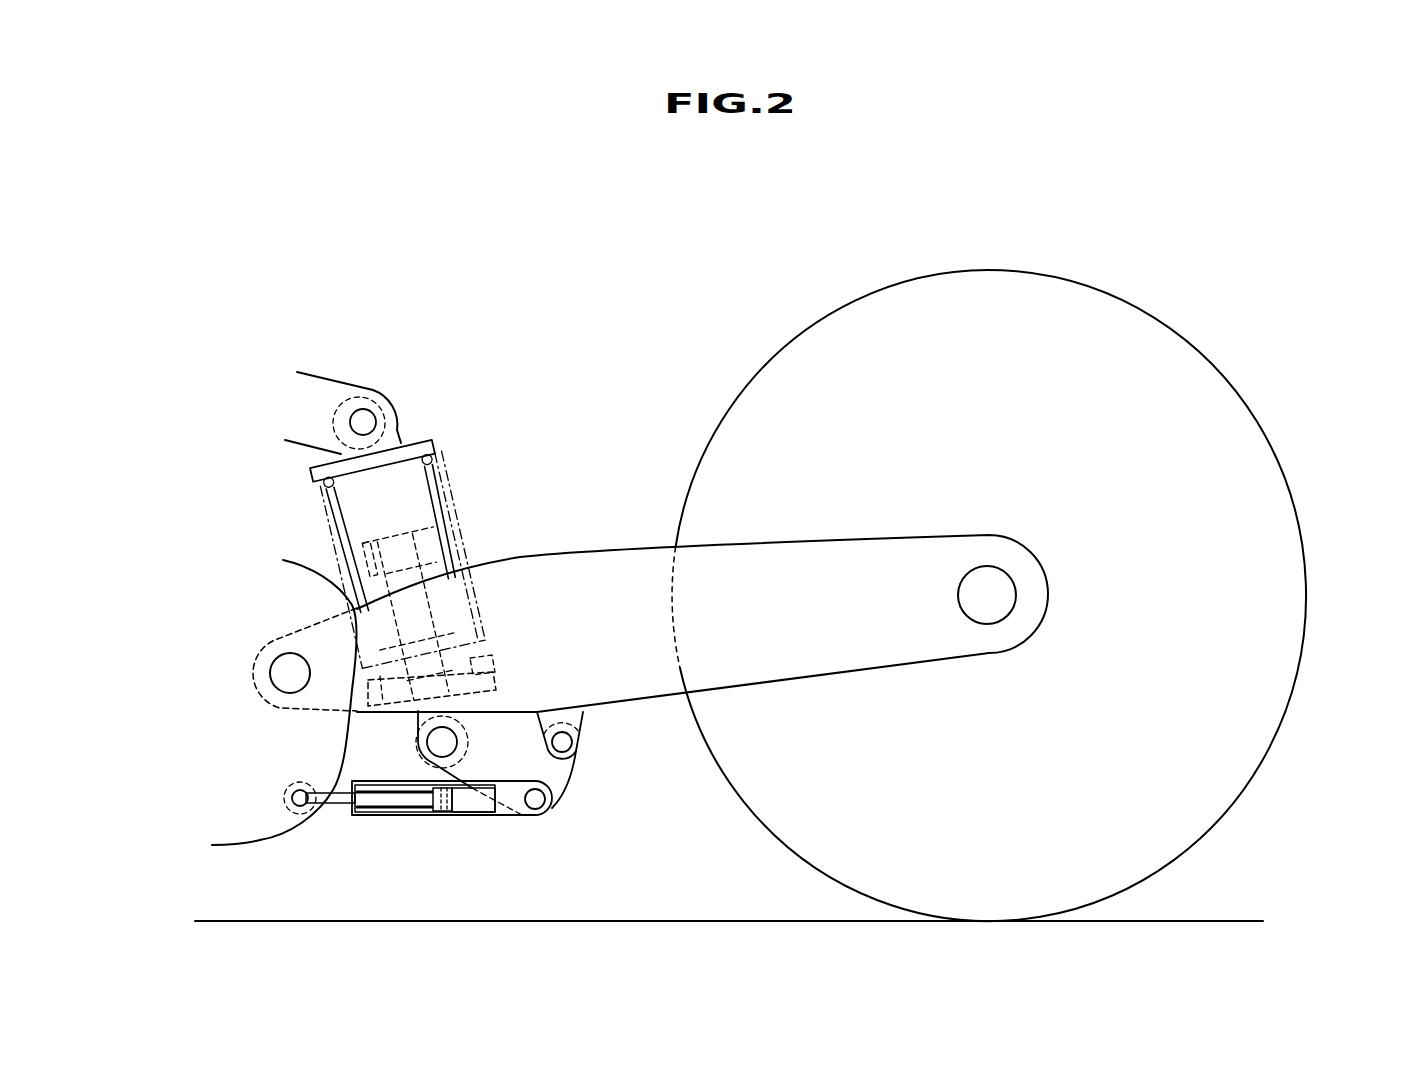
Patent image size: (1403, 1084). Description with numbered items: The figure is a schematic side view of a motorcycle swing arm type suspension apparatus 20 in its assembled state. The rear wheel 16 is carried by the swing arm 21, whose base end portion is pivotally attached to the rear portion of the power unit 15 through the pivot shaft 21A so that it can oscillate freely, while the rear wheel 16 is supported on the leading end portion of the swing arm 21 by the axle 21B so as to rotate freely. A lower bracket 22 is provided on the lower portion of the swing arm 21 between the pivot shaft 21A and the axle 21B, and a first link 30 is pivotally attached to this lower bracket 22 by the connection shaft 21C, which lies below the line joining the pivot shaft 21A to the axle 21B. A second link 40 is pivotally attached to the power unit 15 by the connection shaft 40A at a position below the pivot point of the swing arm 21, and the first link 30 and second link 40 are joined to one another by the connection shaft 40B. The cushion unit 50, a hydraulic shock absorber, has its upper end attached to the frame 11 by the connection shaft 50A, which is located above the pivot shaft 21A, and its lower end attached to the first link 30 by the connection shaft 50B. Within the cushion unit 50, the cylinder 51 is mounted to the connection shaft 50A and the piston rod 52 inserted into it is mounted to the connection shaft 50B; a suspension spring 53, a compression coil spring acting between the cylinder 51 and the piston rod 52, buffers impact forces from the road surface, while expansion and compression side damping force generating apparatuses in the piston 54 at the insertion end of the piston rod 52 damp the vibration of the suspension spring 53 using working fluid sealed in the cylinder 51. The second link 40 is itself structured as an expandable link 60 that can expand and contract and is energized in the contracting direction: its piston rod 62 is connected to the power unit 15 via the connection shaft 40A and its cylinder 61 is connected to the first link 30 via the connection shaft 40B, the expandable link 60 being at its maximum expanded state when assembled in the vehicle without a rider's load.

The frame 11 is at (324, 378).
The power unit 15 is at (297, 558).
The rear wheel 16 is at (1019, 268).
The suspension apparatus 20 is at (548, 427).
The swing arm 21 is at (608, 563).
The pivot shaft 21A is at (283, 677).
The axle 21B is at (997, 593).
The connection shaft 21C is at (568, 742).
The lower bracket 22 is at (578, 713).
The first link 30 is at (553, 773).
The second link 40 is at (391, 818).
The connection shaft 40A is at (300, 798).
The connection shaft 40B is at (535, 808).
The cushion unit 50 is at (400, 564).
The connection shaft 50A is at (362, 422).
The connection shaft 50B is at (442, 740).
The cylinder 51 is at (435, 493).
The piston rod 52 is at (496, 690).
The suspension spring 53 is at (452, 523).
The piston 54 is at (413, 548).
The expandable link 60 is at (431, 816).
The cylinder 61 is at (481, 816).
The piston rod 62 is at (340, 810).